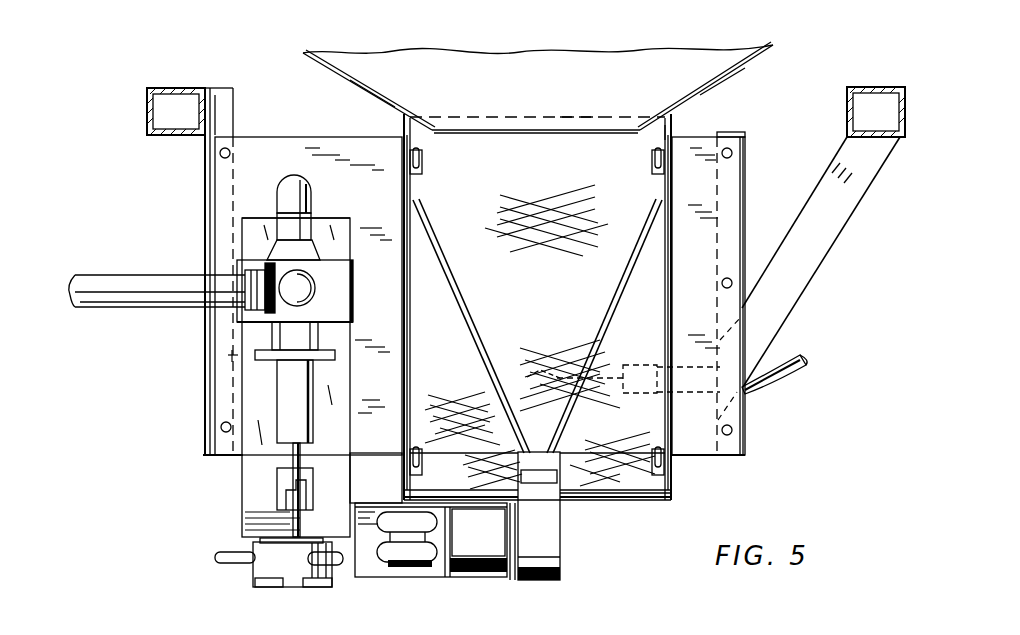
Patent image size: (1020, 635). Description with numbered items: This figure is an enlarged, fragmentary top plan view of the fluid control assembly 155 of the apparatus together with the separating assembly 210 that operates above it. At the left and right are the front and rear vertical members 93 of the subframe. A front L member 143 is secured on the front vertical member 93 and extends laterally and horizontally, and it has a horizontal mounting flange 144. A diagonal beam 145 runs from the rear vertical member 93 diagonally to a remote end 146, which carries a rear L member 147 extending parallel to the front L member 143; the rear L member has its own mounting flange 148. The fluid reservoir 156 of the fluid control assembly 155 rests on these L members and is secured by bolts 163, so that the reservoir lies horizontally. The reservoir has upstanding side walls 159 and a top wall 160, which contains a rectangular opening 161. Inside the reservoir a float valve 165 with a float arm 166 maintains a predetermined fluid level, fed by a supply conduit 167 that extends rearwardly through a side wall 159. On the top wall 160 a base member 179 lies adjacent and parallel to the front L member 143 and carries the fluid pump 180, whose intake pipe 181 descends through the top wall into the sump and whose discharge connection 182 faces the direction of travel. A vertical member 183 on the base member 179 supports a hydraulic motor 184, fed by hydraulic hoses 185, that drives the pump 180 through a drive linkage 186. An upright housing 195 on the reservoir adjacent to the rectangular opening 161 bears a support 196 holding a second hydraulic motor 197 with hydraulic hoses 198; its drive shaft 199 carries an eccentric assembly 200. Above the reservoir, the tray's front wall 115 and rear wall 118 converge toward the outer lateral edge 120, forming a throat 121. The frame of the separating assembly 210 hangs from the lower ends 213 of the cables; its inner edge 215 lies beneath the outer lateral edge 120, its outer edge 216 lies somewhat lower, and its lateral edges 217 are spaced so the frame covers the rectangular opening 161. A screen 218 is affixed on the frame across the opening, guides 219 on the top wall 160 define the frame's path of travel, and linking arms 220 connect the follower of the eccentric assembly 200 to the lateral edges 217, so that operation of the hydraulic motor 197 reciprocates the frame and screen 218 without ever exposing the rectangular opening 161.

The vertical member 93 is at (148, 124).
The front wall 115 is at (357, 93).
The rear wall 118 is at (733, 80).
The outer lateral edge 120 is at (530, 135).
The throat 121 is at (562, 120).
The front L member 143 is at (229, 87).
The horizontal mounting flange 144 is at (220, 120).
The diagonal beam 145 is at (821, 262).
The remote end 146 is at (760, 342).
The rear L member 147 is at (746, 224).
The mounting flange 148 is at (740, 132).
The fluid control assembly 155 is at (658, 499).
The fluid reservoir 156 is at (675, 457).
The side wall 159 is at (315, 137).
The top wall 160 is at (315, 374).
The rectangular opening 161 is at (670, 135).
The bolts 163 is at (231, 153).
The float valve 165 is at (637, 364).
The float arm 166 is at (527, 377).
The supply conduit 167 is at (785, 376).
The base member 179 is at (323, 218).
The fluid pump 180 is at (352, 306).
The intake pipe 181 is at (280, 185).
The discharge connection 182 is at (300, 288).
The vertical member 183 is at (172, 288).
The hydraulic motor 184 is at (294, 454).
The hydraulic hoses 185 is at (232, 565).
The drive linkage 186 is at (300, 478).
The upright housing 195 is at (381, 470).
The support 196 is at (477, 576).
The hydraulic motor 197 is at (478, 532).
The hydraulic hoses 198 is at (420, 527).
The drive shaft 199 is at (512, 580).
The eccentric assembly 200 is at (562, 558).
The separating assembly 210 is at (672, 277).
The lower ends 213 is at (420, 159).
The inner edge 215 is at (590, 115).
The outer edge 216 is at (605, 498).
The lateral edges 217 is at (410, 358).
The screen 218 is at (540, 328).
The guides 219 is at (404, 180).
The linking arms 220 is at (466, 326).